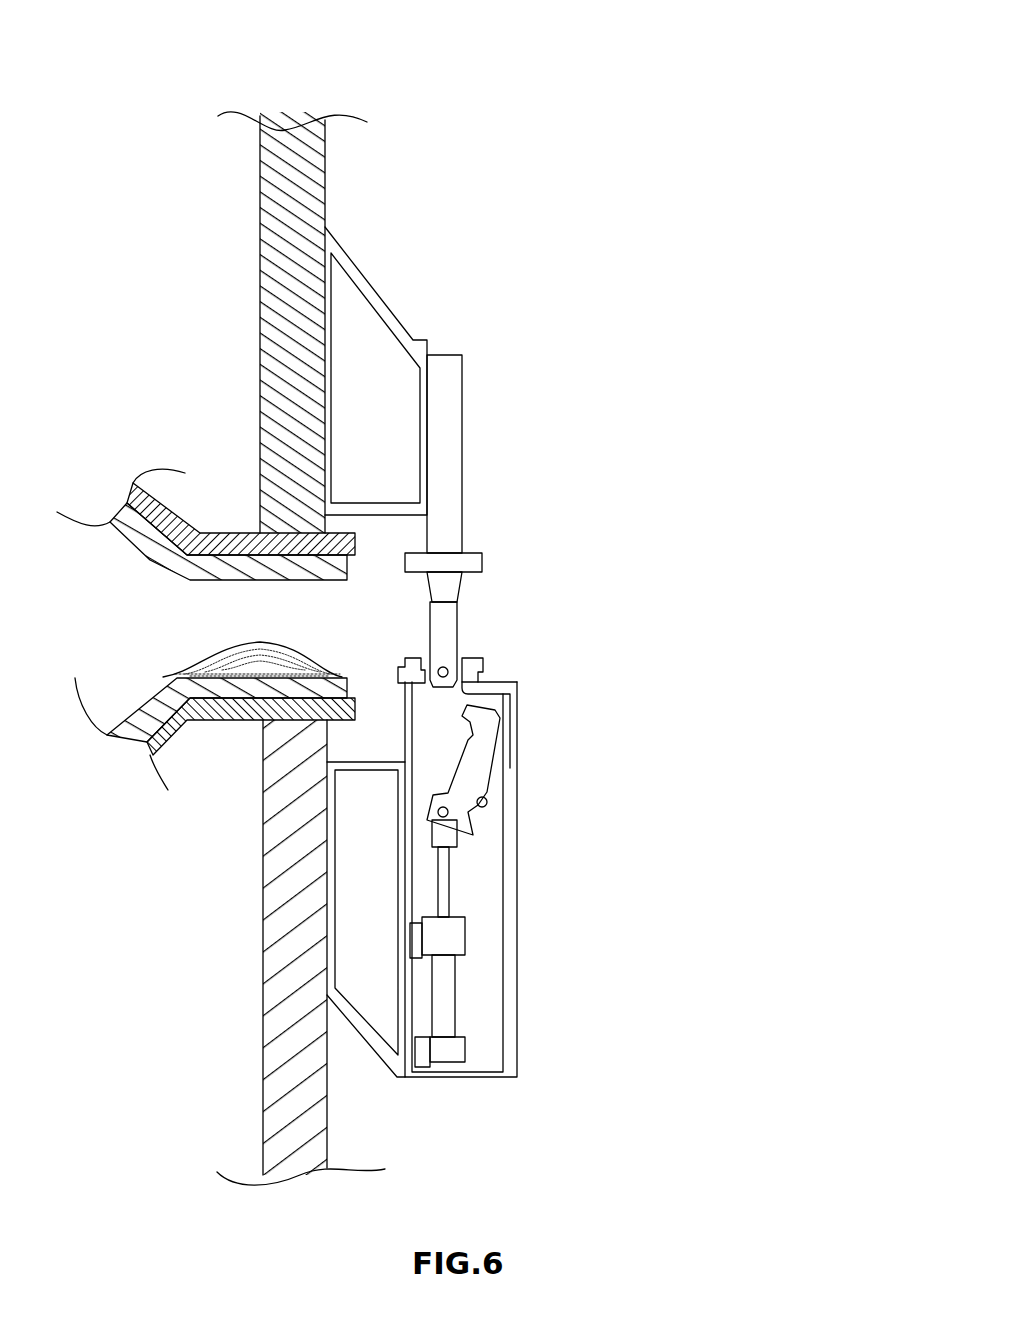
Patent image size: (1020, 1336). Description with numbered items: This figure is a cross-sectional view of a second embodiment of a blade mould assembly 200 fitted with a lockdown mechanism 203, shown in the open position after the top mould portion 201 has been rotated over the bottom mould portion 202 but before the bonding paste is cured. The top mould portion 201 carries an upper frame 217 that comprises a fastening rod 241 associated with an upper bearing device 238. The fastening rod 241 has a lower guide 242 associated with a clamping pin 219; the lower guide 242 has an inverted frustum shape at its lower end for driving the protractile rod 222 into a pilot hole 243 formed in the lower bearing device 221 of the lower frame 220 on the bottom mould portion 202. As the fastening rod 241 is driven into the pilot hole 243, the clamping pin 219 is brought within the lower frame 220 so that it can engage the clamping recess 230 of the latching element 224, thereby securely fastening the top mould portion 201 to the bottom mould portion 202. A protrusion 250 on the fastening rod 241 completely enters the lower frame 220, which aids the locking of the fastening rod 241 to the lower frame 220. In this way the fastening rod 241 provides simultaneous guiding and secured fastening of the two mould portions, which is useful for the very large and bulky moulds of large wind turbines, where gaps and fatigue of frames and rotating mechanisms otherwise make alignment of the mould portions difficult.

The blade mould assembly 200 is at (700, 102).
The top mould portion 201 is at (168, 205).
The bottom mould portion 202 is at (170, 1162).
The lockdown mechanism 203 is at (777, 653).
The upper frame 217 is at (380, 310).
The clamping pin 219 is at (443, 667).
The lower frame 220 is at (405, 1083).
The lower bearing device 221 is at (480, 665).
The protractile rod 222 is at (445, 895).
The latching element 224 is at (484, 738).
The clamping recess 230 is at (475, 725).
The upper bearing device 238 is at (473, 560).
The fastening rod 241 is at (446, 478).
The lower guide 242 is at (453, 617).
The pilot hole 243 is at (463, 695).
The protrusion 250 is at (450, 585).